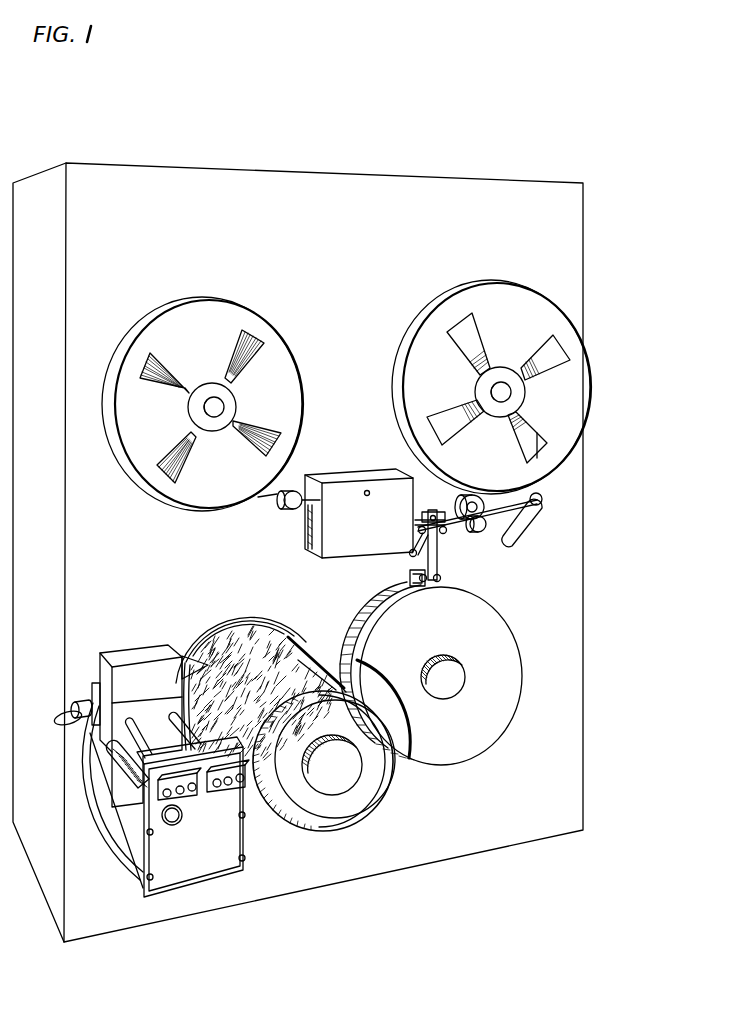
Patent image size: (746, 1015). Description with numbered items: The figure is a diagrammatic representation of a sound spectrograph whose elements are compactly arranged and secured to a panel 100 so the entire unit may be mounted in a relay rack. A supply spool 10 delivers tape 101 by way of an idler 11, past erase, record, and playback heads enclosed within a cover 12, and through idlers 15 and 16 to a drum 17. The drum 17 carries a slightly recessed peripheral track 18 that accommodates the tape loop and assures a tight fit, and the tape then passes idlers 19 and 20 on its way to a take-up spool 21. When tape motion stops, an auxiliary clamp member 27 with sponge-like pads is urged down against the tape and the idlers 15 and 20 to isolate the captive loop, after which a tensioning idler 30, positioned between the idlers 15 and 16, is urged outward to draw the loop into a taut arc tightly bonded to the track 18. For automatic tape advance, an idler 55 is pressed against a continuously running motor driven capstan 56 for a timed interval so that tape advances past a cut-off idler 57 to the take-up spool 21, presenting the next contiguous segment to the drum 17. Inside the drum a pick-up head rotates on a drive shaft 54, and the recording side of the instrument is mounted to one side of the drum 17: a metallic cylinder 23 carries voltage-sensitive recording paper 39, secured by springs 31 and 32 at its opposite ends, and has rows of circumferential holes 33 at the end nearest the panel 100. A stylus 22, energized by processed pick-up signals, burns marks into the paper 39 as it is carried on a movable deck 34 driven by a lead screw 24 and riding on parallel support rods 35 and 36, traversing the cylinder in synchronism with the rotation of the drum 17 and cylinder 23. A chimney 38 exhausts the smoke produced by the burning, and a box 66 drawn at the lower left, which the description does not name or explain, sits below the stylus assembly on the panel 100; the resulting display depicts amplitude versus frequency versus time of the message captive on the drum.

The panel 100 is at (447, 180).
The supply spool 10 is at (197, 512).
The take-up spool 21 is at (530, 298).
The tape 101 is at (264, 502).
The idler 11 is at (295, 516).
The cover 12 is at (362, 550).
The auxiliary clamp member 27 is at (434, 537).
The idler 15 is at (432, 528).
The idler 20 is at (447, 530).
The tensioning idler 30 is at (438, 557).
The idler 19 is at (445, 583).
The idler 16 is at (410, 578).
The idler 55 is at (462, 500).
The motor driven capstan 56 is at (480, 532).
The cut-off idler 57 is at (545, 500).
The drum 17 is at (431, 673).
The peripheral track 18 is at (380, 609).
The drive shaft 54 is at (466, 682).
The metallic cylinder 23 is at (372, 796).
The circumferential holes 33 is at (228, 618).
The spring 31 is at (270, 628).
The recording paper 39 is at (310, 655).
The spring 32 is at (336, 682).
The chimney 38 is at (186, 656).
The stylus 22 is at (195, 688).
The support rod 36 is at (183, 718).
The support rod 35 is at (157, 740).
The lead screw 24 is at (137, 770).
The movable deck 34 is at (88, 735).
The control box 66 is at (238, 844).